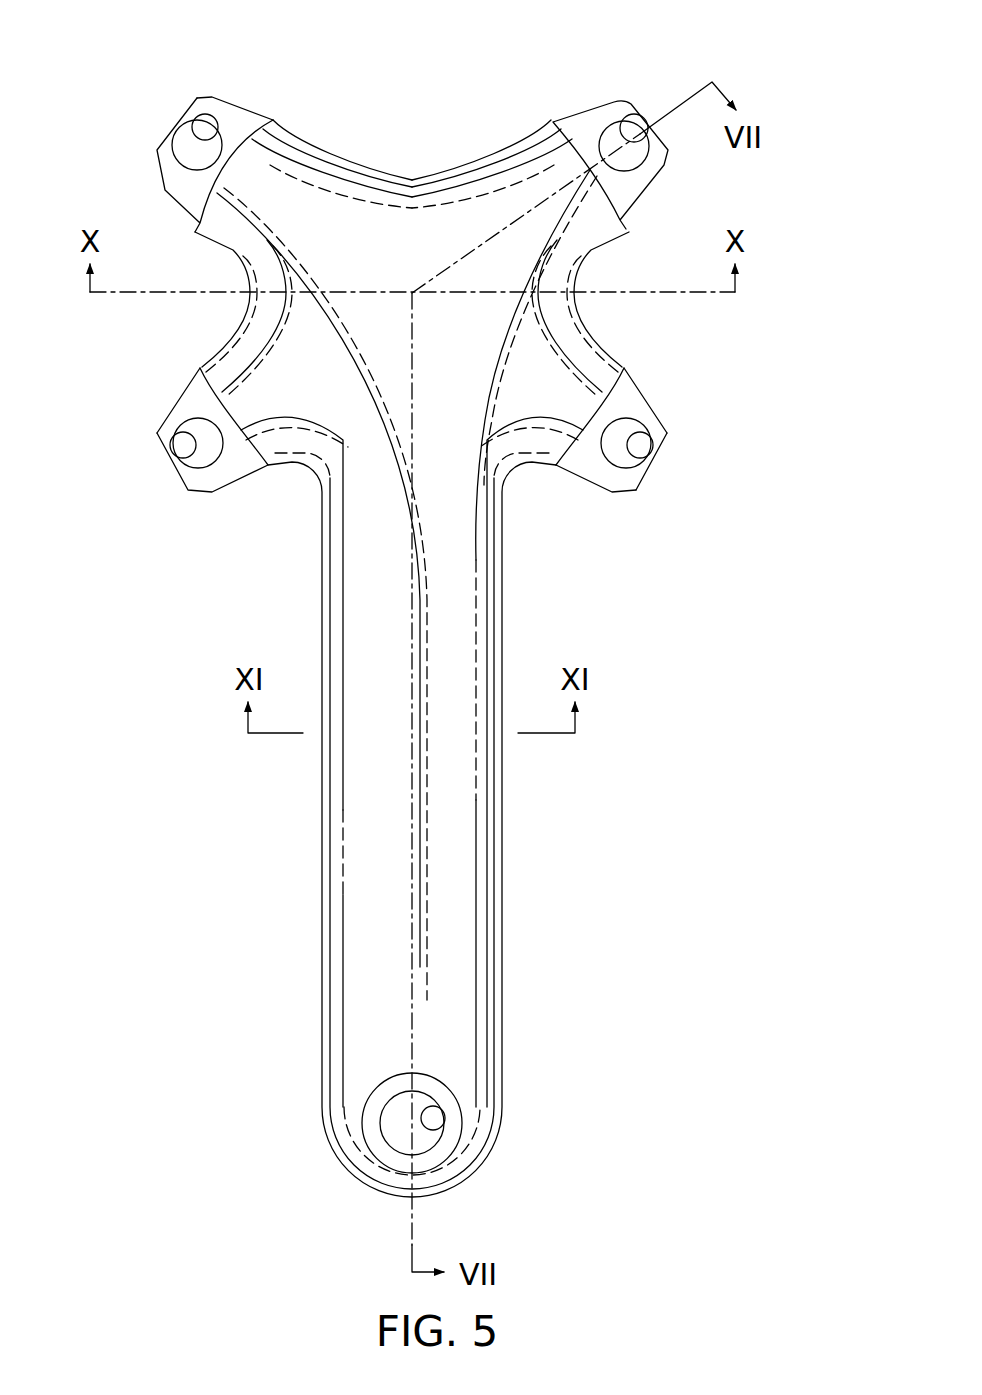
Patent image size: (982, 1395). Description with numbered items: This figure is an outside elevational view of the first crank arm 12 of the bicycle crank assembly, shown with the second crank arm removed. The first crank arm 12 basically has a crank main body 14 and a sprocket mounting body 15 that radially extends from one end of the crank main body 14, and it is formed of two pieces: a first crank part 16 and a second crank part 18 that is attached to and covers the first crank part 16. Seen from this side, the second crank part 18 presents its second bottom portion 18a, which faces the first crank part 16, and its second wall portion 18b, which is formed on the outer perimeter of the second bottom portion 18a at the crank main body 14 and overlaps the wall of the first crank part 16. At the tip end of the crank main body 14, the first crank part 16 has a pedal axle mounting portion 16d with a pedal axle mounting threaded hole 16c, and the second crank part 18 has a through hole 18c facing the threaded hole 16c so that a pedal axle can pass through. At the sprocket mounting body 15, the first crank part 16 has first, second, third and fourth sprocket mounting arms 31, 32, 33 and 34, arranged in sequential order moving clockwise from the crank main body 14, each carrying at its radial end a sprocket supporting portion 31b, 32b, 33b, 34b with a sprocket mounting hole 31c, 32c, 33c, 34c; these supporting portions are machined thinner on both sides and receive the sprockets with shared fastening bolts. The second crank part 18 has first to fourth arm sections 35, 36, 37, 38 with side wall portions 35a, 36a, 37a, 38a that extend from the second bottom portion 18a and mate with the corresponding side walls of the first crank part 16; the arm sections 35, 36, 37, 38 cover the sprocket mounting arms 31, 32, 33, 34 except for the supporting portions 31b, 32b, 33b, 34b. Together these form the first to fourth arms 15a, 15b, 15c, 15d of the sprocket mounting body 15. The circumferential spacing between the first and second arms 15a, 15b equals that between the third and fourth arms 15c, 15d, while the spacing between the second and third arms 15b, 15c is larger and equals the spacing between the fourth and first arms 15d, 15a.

The first crank arm 12 is at (345, 42).
The crank main body 14 is at (533, 602).
The sprocket mounting body 15 is at (664, 488).
The first arm 15a is at (178, 377).
The second arm 15b is at (206, 255).
The third arm 15c is at (611, 249).
The fourth arm 15d is at (651, 367).
The first crank part 16 is at (197, 94).
The pedal axle mounting threaded hole 16c is at (438, 1136).
The pedal axle mounting portion 16d is at (455, 1096).
The second crank part 18 is at (432, 177).
The second bottom portion 18a is at (391, 241).
The second wall portion 18b is at (506, 966).
The through hole 18c is at (428, 1165).
The first sprocket mounting arm 31 is at (233, 496).
The first sprocket supporting portion 31b is at (202, 481).
The first sprocket mounting hole 31c is at (178, 441).
The second sprocket mounting arm 32 is at (150, 120).
The second sprocket supporting portion 32b is at (168, 178).
The second sprocket mounting hole 32c is at (221, 128).
The third sprocket mounting arm 33 is at (641, 95).
The third sprocket supporting portion 33b is at (660, 160).
The third sprocket mounting hole 33c is at (604, 133).
The fourth sprocket mounting arm 34 is at (682, 394).
The fourth sprocket supporting portion 34b is at (612, 481).
The fourth sprocket mounting hole 34c is at (633, 452).
The first arm section 35 is at (285, 470).
The side wall portion 35a is at (210, 366).
The second arm section 36 is at (301, 133).
The side wall portion 36a is at (327, 157).
The third arm section 37 is at (538, 124).
The side wall portion 37a is at (497, 158).
The fourth arm section 38 is at (537, 472).
The side wall portion 38a is at (622, 353).